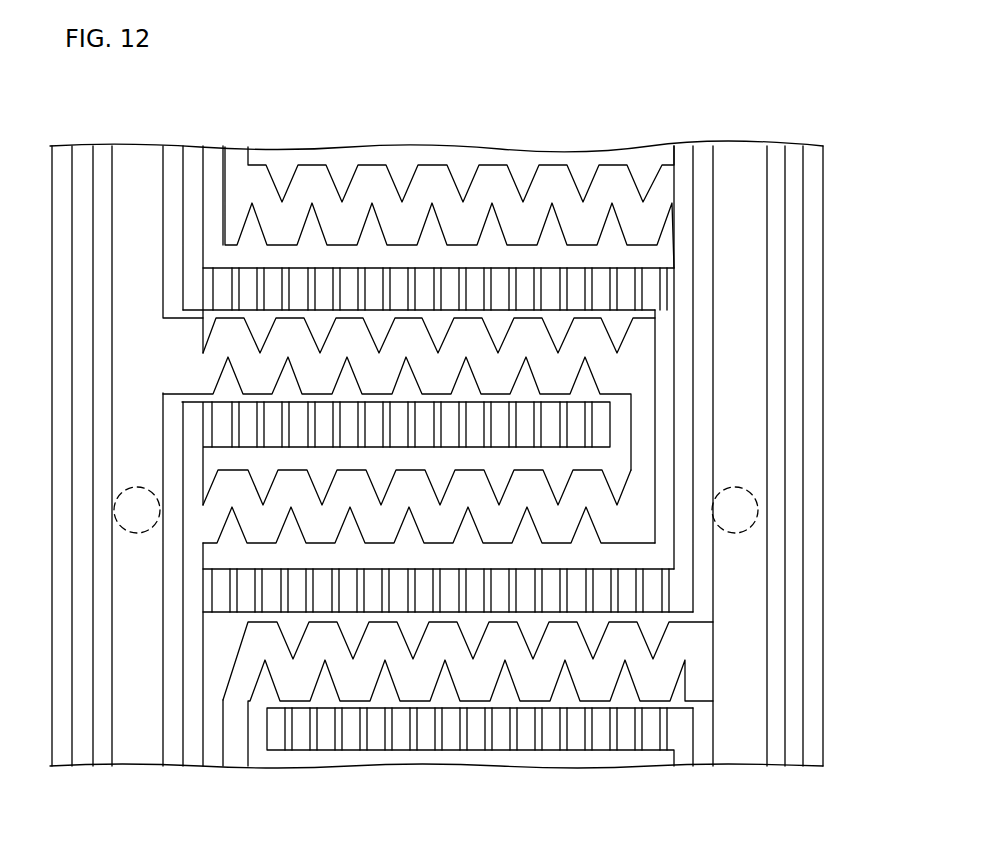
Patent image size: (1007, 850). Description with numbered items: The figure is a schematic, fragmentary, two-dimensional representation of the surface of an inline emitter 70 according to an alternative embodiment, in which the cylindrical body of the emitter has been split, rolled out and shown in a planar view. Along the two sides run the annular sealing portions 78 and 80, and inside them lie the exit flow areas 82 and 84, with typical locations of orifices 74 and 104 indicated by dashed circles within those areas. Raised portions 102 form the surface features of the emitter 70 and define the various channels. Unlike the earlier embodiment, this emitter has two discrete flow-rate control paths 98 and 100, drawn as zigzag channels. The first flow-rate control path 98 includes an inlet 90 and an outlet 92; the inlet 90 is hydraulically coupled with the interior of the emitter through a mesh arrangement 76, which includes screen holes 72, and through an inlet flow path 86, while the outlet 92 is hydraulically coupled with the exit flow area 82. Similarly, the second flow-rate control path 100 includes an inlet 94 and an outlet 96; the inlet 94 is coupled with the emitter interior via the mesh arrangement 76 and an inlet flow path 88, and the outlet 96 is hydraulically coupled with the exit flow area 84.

The inline emitter 70 is at (822, 347).
The screen holes 72 is at (590, 268).
The orifice 74 is at (125, 488).
The mesh arrangement 76 is at (578, 397).
The annular sealing portion 78 is at (112, 141).
The annular sealing portion 80 is at (823, 141).
The exit flow area 82 is at (155, 644).
The exit flow area 84 is at (757, 592).
The inlet flow path 86 is at (186, 189).
The inlet flow path 88 is at (683, 404).
The inlet 90 is at (218, 534).
The outlet 92 is at (178, 368).
The inlet 94 is at (690, 192).
The outlet 96 is at (735, 674).
The first flow-rate control path 98 is at (421, 346).
The second flow-rate control path 100 is at (422, 226).
The raised portions 102 is at (265, 150).
The orifice 104 is at (757, 498).